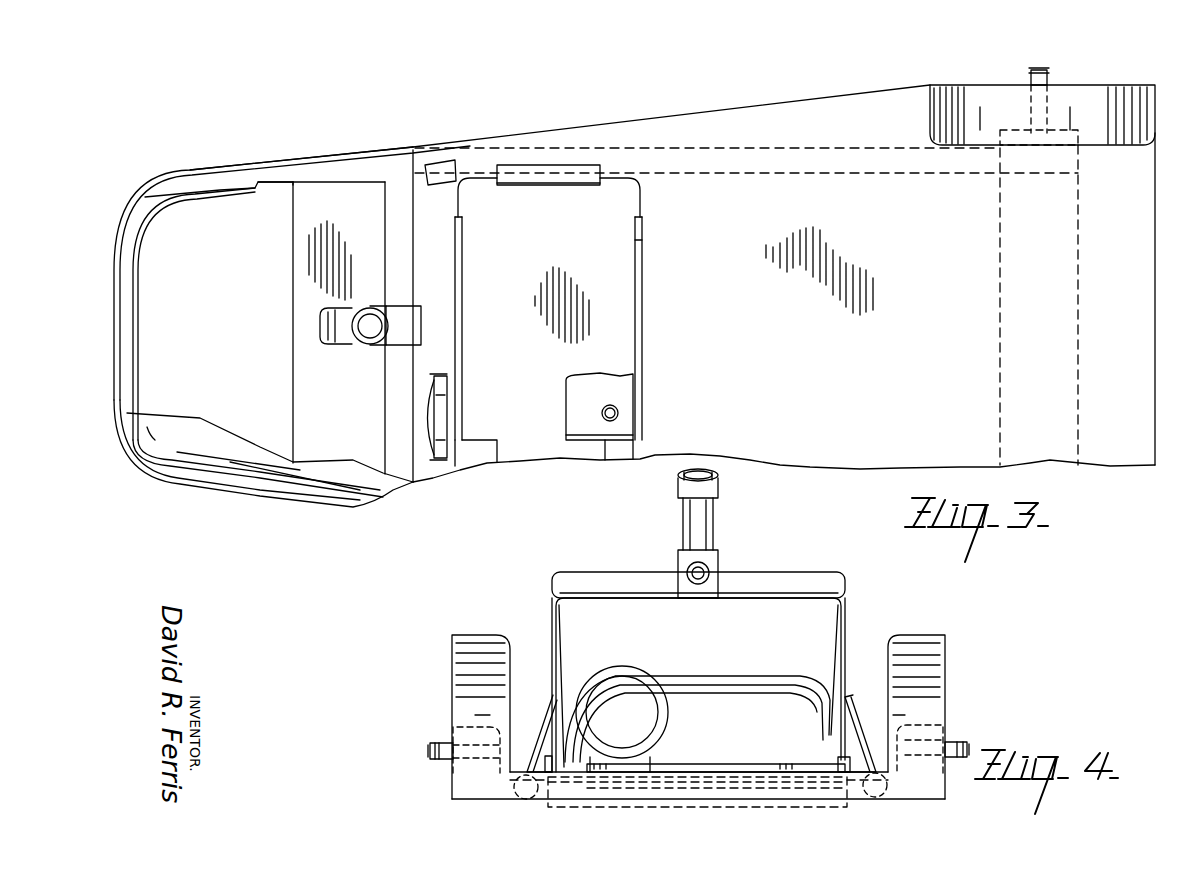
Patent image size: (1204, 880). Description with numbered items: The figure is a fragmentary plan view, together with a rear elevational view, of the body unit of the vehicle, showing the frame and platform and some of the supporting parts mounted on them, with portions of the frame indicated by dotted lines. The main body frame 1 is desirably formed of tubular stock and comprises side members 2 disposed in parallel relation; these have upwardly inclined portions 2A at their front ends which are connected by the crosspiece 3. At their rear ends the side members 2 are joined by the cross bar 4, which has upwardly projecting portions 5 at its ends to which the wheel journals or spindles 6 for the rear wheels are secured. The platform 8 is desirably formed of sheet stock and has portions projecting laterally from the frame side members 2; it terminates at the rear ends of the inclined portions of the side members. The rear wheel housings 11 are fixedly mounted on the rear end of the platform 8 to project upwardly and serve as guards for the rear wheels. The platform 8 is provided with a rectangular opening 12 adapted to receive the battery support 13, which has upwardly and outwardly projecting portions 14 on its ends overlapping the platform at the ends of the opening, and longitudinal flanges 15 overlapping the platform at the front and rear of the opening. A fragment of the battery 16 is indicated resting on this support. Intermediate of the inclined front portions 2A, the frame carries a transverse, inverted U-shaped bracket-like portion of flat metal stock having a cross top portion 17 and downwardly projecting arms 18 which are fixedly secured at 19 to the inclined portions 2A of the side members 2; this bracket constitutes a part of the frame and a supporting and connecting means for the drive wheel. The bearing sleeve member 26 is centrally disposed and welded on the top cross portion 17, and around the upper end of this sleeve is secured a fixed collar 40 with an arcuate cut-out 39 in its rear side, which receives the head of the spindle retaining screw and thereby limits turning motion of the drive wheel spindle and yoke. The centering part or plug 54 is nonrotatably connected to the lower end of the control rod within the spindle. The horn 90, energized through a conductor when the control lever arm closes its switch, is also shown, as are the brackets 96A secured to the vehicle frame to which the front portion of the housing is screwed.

In FIG. 3, the main body frame 1 is at (400, 149).
In FIG. 4, the main body frame 1 is at (857, 722).
In FIG. 3, the side members 2 is at (612, 148).
In FIG. 3, the upwardly inclined portions 2A is at (268, 172).
In FIG. 3, the crosspiece 3 is at (133, 328).
In FIG. 4, the crosspiece 3 is at (713, 692).
In FIG. 3, the cross bar 4 is at (1078, 323).
In FIG. 3, the upwardly projecting portions 5 is at (1075, 132).
In FIG. 4, the upwardly projecting portions 5 is at (498, 736).
In FIG. 3, the wheel journals or spindles 6 is at (1043, 70).
In FIG. 4, the wheel journals or spindles 6 is at (430, 749).
In FIG. 3, the platform 8 is at (745, 126).
In FIG. 4, the platform 8 is at (768, 766).
In FIG. 3, the rear wheel housings 11 is at (963, 92).
In FIG. 4, the rear wheel housings 11 is at (472, 650).
In FIG. 3, the rectangular opening 12 is at (644, 192).
In FIG. 3, the battery support 13 is at (614, 240).
In FIG. 4, the battery support 13 is at (672, 800).
In FIG. 3, the upwardly and outwardly projecting portions 14 is at (540, 172).
In FIG. 4, the upwardly and outwardly projecting portions 14 is at (533, 762).
In FIG. 3, the longitudinal flanges 15 is at (640, 285).
In FIG. 4, the longitudinal flanges 15 is at (735, 766).
In FIG. 3, the battery 16 is at (622, 401).
In FIG. 3, the cross top portion 17 is at (302, 270).
In FIG. 4, the cross top portion 17 is at (578, 585).
In FIG. 3, the downwardly projecting arms 18 is at (280, 186).
In FIG. 4, the downwardly projecting arms 18 is at (562, 618).
In FIG. 4, the securing point 19 is at (847, 750).
In FIG. 3, the bearing sleeve member 26 is at (320, 330).
In FIG. 4, the bearing sleeve member 26 is at (683, 530).
In FIG. 3, the arcuate cut-out 39 is at (421, 320).
In FIG. 4, the arcuate cut-out 39 is at (680, 482).
In FIG. 3, the fixed collar 40 is at (345, 322).
In FIG. 4, the fixed collar 40 is at (716, 497).
In FIG. 3, the centering part or plug 54 is at (213, 441).
In FIG. 3, the horn 90 is at (440, 400).
In FIG. 4, the horn 90 is at (632, 695).
In FIG. 3, the brackets 96A is at (445, 162).